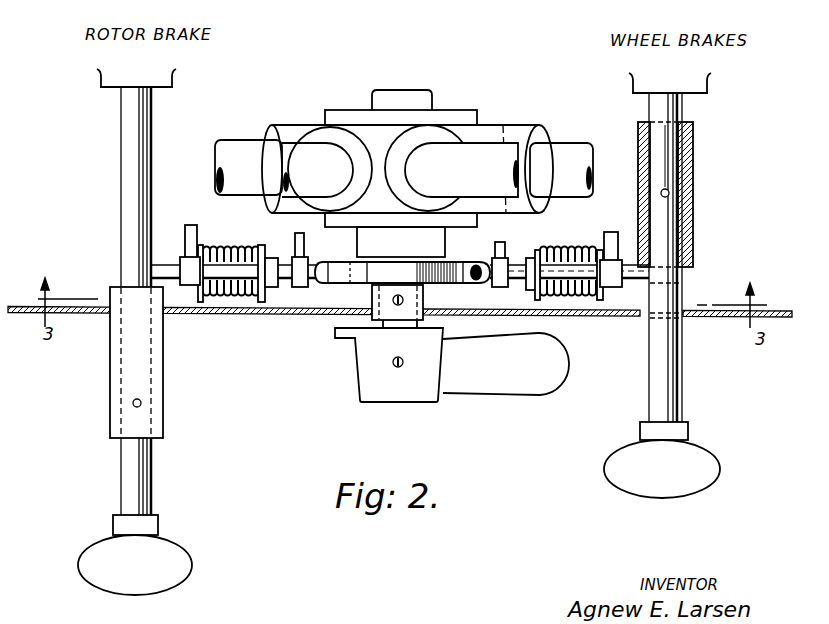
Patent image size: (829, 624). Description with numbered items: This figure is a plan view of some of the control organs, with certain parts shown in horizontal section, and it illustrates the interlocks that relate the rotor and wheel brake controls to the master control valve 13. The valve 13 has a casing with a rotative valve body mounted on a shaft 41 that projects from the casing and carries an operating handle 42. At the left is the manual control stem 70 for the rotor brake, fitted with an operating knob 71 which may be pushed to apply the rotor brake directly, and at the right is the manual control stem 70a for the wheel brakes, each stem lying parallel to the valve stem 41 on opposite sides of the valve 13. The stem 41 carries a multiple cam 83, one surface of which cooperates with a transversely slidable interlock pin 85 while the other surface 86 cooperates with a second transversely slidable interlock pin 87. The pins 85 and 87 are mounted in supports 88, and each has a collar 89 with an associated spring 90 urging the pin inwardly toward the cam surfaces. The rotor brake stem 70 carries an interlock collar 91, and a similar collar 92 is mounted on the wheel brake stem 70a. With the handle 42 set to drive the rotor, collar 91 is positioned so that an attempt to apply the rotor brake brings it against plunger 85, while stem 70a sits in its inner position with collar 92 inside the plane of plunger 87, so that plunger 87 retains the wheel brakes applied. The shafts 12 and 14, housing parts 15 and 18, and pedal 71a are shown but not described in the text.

The wheel brake shaft 12 is at (563, 150).
The master control valve 13 is at (471, 108).
The rotor brake shaft 14 is at (229, 147).
The plunger pin 15 is at (433, 157).
The plunger pin 18 is at (310, 150).
The shaft 41 is at (388, 325).
The operating handle 42 is at (527, 380).
The manual control stem 70 is at (124, 210).
The manual control stem 70a is at (672, 287).
The operating knob 71 is at (150, 580).
The wheel brake pedal 71a is at (658, 485).
The multiple cam 83 is at (363, 274).
The interlock pin 85 is at (161, 265).
The cam surface 86 is at (453, 264).
The interlock pin 87 is at (632, 283).
The supports 88 is at (294, 245).
The collar 89 is at (260, 288).
The spring 90 is at (230, 294).
The interlock collar 91 is at (163, 400).
The interlock collar 92 is at (688, 165).